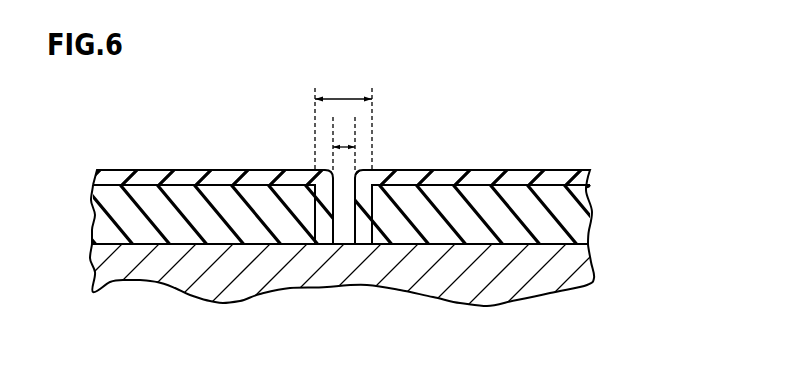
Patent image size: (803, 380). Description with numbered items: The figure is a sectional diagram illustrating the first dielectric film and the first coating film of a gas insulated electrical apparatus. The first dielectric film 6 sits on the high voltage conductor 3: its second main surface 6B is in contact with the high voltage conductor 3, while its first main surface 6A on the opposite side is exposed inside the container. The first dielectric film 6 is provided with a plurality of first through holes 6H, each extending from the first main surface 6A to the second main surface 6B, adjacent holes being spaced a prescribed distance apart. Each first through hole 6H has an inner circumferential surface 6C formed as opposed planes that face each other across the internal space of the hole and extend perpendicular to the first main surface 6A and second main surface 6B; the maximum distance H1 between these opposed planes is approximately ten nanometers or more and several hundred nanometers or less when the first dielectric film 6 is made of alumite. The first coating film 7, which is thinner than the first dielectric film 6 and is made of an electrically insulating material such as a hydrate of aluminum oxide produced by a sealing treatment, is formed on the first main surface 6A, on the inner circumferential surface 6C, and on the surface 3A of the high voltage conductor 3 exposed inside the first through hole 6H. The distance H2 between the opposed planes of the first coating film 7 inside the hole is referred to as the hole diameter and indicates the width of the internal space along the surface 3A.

The high voltage conductor 3 is at (435, 273).
The surface of high voltage conductor 3A is at (558, 247).
The first dielectric film 6 is at (251, 208).
The first main surface 6A is at (540, 185).
The second main surface 6B is at (538, 248).
The inner circumferential surface 6C is at (318, 220).
The first through hole 6H is at (395, 114).
The first coating film 7 is at (175, 180).
The maximum distance H1 is at (343, 88).
The distance H2 is at (343, 132).